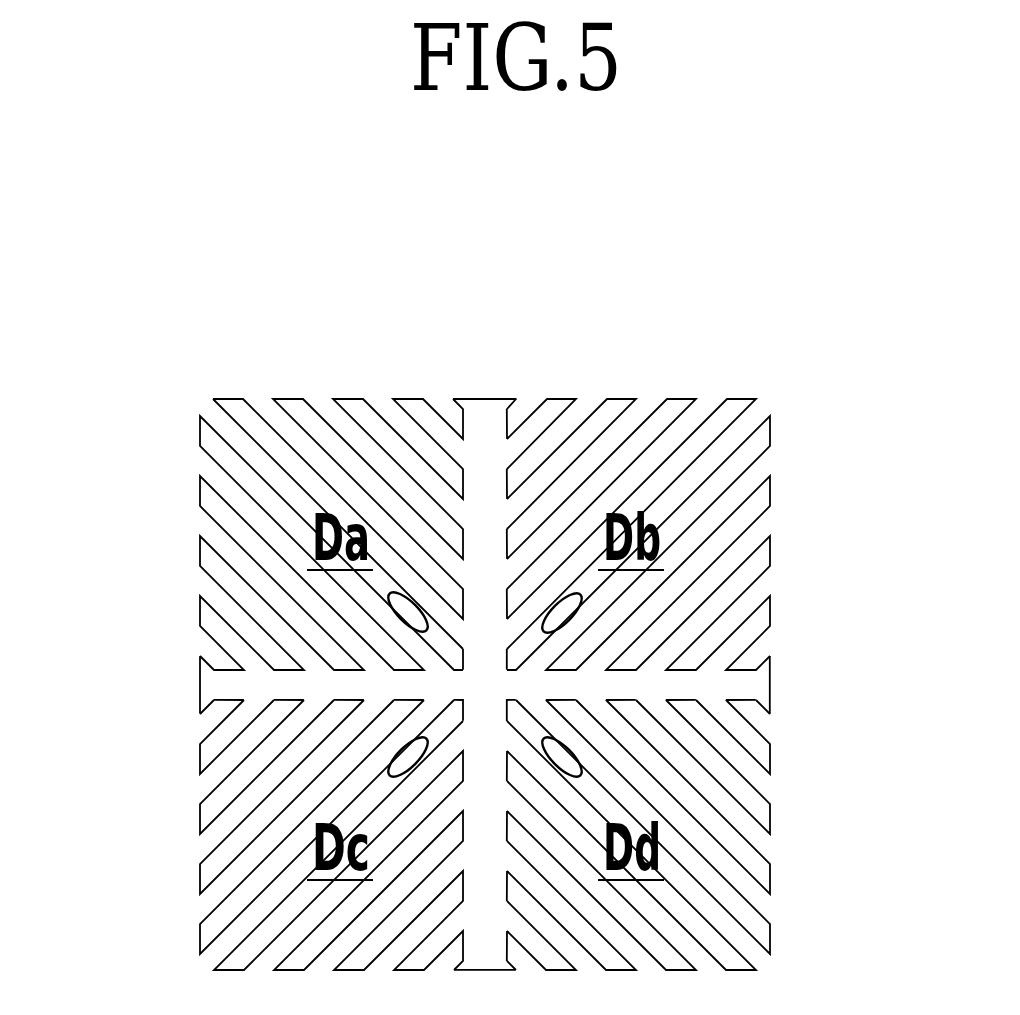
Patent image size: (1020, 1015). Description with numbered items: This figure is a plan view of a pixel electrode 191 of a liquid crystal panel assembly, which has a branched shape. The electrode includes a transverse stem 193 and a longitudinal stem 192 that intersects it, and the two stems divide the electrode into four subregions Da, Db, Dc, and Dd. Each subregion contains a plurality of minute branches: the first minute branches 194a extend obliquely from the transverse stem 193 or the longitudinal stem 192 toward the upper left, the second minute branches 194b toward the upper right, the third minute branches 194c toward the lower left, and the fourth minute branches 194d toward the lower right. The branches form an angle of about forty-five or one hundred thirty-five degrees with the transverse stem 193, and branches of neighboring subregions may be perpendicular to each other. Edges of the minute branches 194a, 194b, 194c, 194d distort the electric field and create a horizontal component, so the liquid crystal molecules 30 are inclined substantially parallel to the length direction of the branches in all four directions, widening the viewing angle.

The pixel electrode 191 is at (649, 378).
The longitudinal stem 192 is at (507, 487).
The transverse stem 193 is at (563, 702).
The first minute branch 194a is at (362, 457).
The second minute branch 194b is at (700, 428).
The third minute branch 194c is at (263, 890).
The fourth minute branch 194d is at (712, 923).
The liquid crystal molecules 30 is at (560, 613).